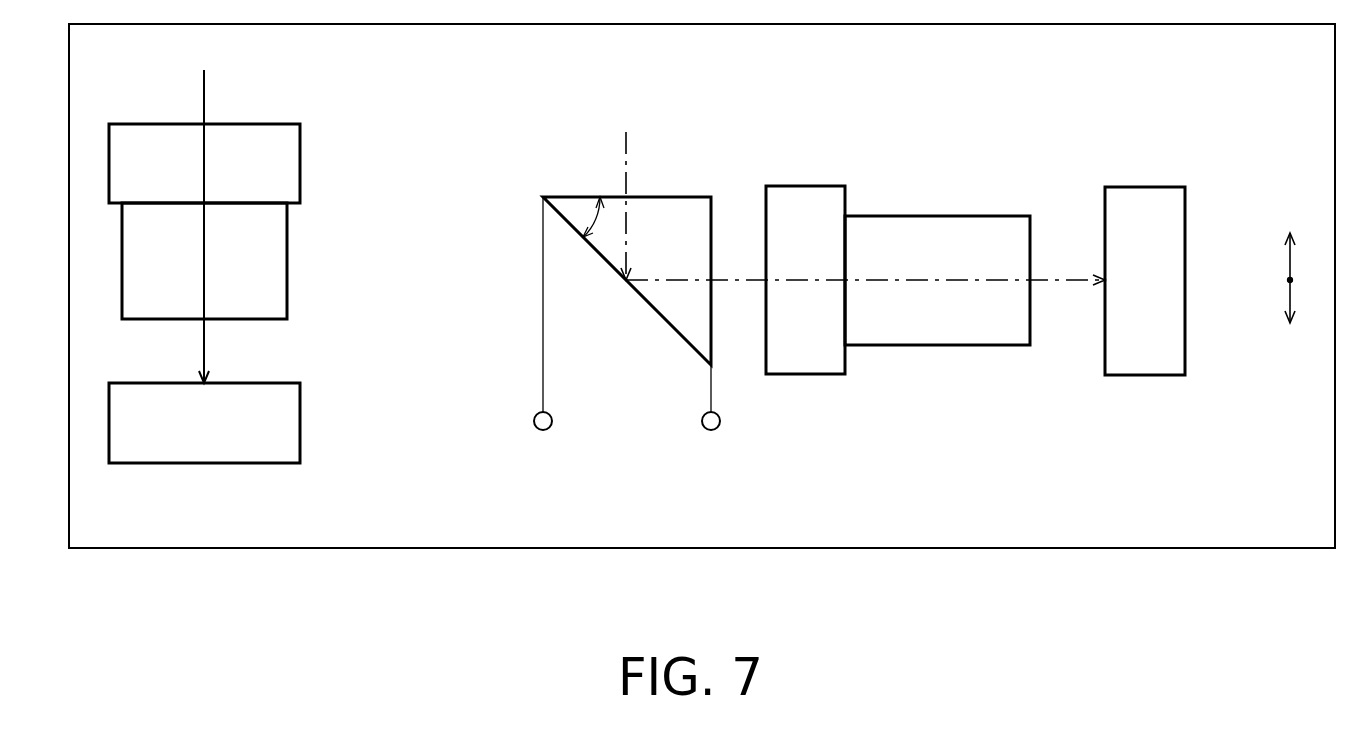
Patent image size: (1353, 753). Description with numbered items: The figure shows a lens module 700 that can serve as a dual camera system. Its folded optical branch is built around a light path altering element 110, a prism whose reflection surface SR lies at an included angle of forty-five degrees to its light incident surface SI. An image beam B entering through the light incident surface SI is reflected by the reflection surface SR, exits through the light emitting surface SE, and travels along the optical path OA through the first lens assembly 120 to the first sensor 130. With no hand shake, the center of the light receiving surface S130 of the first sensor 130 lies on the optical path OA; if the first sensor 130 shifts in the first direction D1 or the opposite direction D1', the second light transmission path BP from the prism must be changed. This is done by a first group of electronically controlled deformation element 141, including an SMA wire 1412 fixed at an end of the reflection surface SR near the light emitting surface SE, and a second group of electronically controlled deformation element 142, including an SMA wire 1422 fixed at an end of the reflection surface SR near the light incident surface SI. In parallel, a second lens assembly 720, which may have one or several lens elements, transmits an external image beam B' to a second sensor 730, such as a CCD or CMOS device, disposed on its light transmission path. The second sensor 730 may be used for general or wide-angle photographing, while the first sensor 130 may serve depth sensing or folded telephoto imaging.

The lens module 700 is at (1308, 521).
The second lens assembly 720 is at (288, 262).
The second sensor 730 is at (301, 423).
The light path altering element 110 is at (650, 308).
The first lens assembly 120 is at (962, 345).
The first sensor 130 is at (1187, 257).
The SMA wire 1422 is at (541, 382).
The second group of electronically controlled deformation element 142 is at (503, 347).
The SMA wire 1412 is at (710, 382).
The first group of electronically controlled deformation element 141 is at (663, 431).
The image beam B' is at (226, 226).
The image beam B is at (822, 208).
The light incident surface SI is at (663, 196).
The light emitting surface SE is at (713, 210).
The reflection surface SR is at (562, 219).
The optical path OA is at (933, 280).
The second light transmission path BP is at (1072, 280).
The light receiving surface S130 is at (1105, 202).
The first direction D1 is at (1291, 299).
The opposite direction D1' is at (1293, 212).